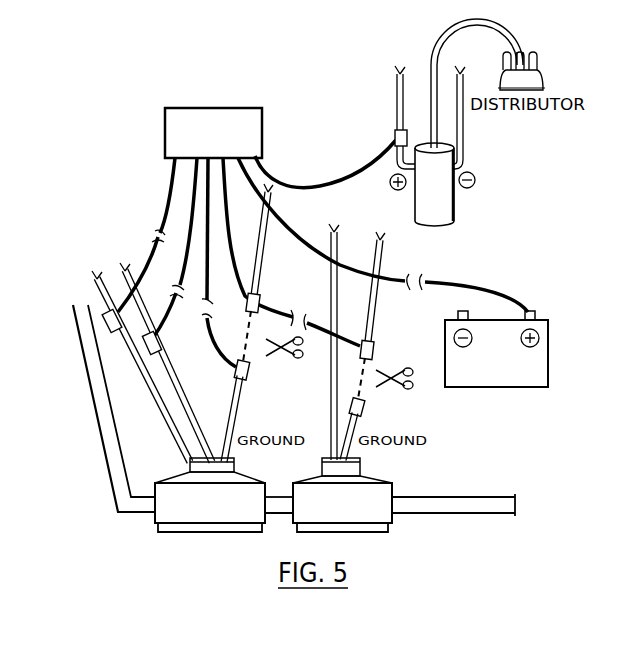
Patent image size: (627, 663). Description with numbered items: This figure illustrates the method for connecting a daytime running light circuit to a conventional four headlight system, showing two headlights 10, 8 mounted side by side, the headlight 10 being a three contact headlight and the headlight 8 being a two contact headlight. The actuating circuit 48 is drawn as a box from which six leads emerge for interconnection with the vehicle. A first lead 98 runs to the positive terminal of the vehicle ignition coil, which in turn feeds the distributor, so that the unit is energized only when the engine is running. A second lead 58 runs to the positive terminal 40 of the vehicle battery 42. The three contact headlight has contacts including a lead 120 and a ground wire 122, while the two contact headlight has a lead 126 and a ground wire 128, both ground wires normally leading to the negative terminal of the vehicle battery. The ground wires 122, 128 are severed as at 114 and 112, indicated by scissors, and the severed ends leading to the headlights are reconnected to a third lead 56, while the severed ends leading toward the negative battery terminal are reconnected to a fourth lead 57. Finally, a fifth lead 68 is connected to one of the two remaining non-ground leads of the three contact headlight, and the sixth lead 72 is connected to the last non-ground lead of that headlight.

The headlight 8 is at (345, 541).
The headlight 10 is at (207, 541).
The positive terminal 40 is at (536, 325).
The vehicle battery 42 is at (452, 386).
The actuating circuit 48 is at (218, 108).
The third lead 56 is at (207, 338).
The fourth lead 57 is at (227, 254).
The second lead 58 is at (462, 282).
The fifth lead 68 is at (193, 198).
The sixth lead 72 is at (158, 246).
The first lead 98 is at (306, 183).
The severing point 112 is at (388, 364).
The severing point 114 is at (269, 338).
The headlight contact lead 120 is at (192, 406).
The ground wire 122 is at (238, 404).
The headlight contact lead 126 is at (329, 446).
The ground wire 128 is at (362, 452).